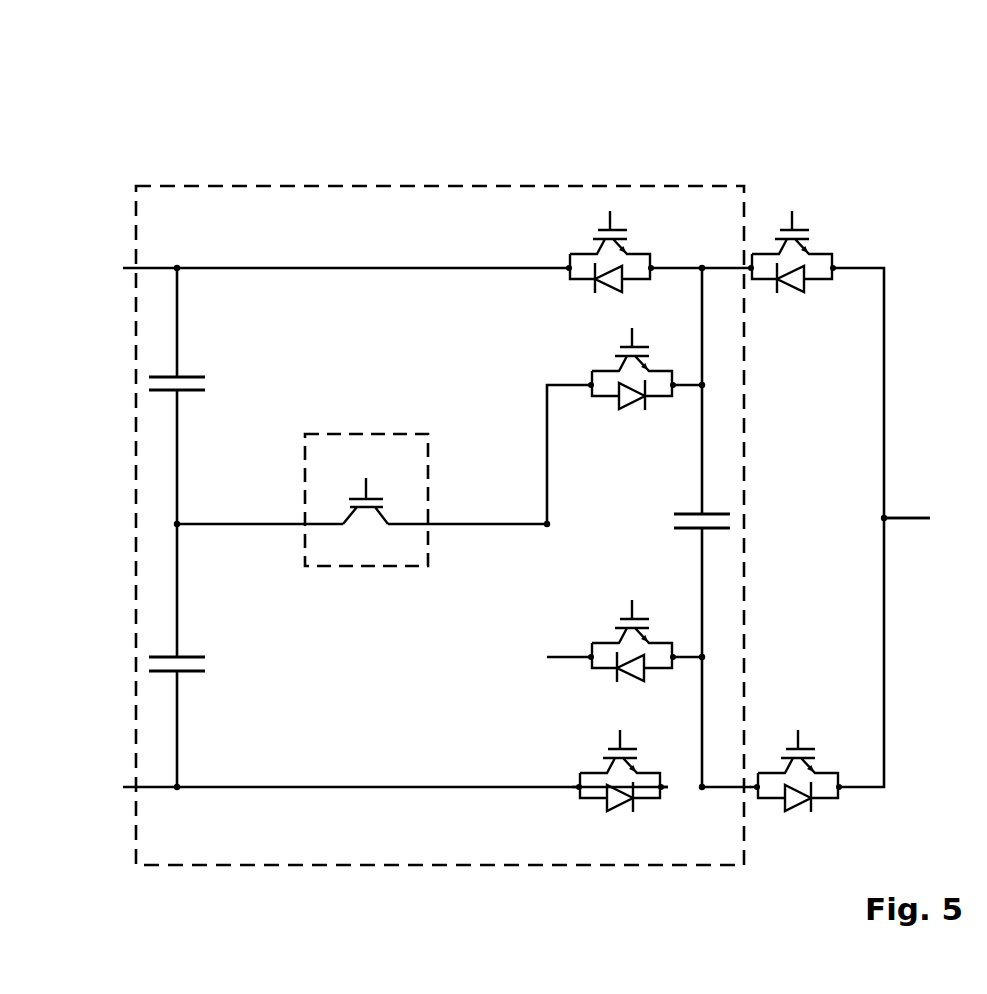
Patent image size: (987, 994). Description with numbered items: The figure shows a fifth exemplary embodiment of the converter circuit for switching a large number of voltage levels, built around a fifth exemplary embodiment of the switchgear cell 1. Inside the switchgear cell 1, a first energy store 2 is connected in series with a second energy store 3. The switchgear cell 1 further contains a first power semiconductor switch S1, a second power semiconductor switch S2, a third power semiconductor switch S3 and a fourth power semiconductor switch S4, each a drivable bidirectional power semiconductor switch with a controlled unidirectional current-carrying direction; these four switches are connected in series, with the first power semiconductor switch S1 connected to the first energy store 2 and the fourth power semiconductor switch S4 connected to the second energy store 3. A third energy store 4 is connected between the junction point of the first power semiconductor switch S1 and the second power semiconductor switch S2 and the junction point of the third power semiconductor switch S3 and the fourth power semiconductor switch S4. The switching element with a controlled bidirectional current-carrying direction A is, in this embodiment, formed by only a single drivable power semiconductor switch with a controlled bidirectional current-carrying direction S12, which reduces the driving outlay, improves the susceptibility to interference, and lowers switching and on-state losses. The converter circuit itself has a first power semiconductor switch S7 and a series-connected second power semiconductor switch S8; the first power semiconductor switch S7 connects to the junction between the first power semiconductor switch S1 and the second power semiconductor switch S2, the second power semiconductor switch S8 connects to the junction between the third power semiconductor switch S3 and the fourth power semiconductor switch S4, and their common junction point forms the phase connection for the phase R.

The switchgear cell 1 is at (347, 186).
The first energy store 2 is at (168, 377).
The second energy store 3 is at (175, 657).
The third energy store 4 is at (713, 514).
The switching element with a controlled bidirectional current-carrying direction A is at (327, 307).
The first power semiconductor switch S1 is at (622, 248).
The second power semiconductor switch S2 is at (637, 369).
The third power semiconductor switch S3 is at (637, 641).
The fourth power semiconductor switch S4 is at (621, 786).
The first power semiconductor switch of the converter circuit S7 is at (804, 247).
The second power semiconductor switch of the converter circuit S8 is at (799, 786).
The drivable power semiconductor switch with a controlled bidirectional current-carr S12 is at (365, 489).
The phase R is at (922, 519).